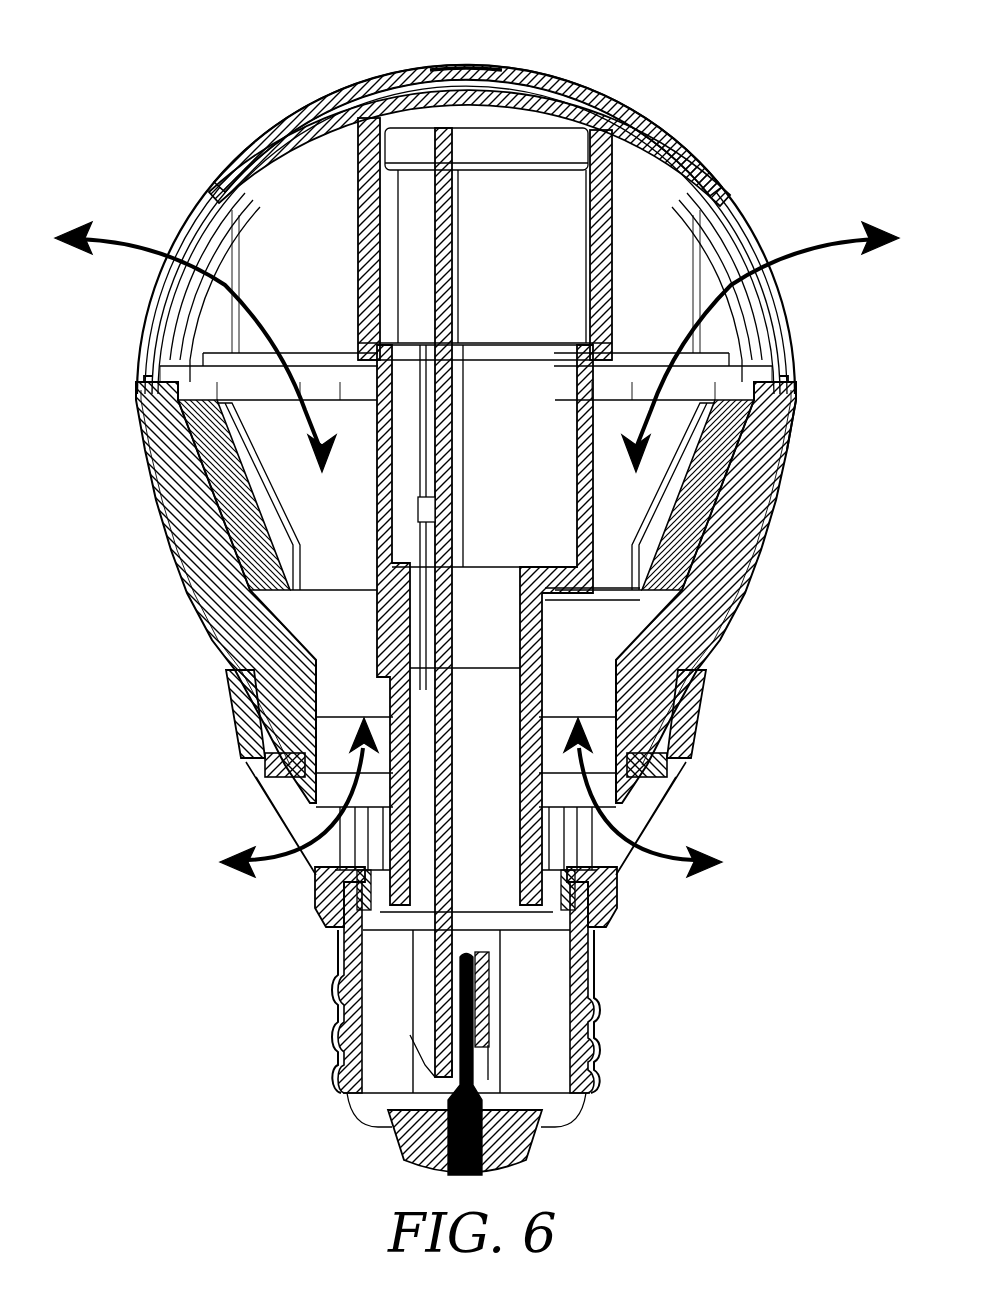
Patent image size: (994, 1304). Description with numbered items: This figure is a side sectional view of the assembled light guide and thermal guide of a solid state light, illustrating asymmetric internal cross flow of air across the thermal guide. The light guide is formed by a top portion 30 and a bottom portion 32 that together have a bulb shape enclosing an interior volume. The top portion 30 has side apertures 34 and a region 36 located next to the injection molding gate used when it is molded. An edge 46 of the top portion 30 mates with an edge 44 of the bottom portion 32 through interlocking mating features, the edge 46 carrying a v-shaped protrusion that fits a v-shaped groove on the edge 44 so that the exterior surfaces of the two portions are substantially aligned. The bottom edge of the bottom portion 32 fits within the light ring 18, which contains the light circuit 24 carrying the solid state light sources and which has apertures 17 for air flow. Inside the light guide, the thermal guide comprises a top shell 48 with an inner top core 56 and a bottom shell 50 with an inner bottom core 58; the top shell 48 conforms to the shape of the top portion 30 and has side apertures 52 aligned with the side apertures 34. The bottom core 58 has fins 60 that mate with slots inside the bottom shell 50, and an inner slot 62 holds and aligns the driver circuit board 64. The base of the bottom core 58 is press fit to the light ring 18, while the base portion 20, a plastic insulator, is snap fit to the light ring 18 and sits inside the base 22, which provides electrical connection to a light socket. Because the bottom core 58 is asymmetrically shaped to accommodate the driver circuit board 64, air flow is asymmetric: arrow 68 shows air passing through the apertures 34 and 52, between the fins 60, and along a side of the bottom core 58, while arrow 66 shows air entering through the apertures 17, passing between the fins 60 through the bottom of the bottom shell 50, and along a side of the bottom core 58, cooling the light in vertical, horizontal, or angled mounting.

The apertures 17 is at (640, 792).
The light ring 18 is at (685, 762).
The base portion 20 is at (598, 925).
The base 22 is at (605, 1035).
The light circuit 24 is at (655, 740).
The top portion 30 is at (672, 130).
The bottom portion 32 is at (752, 535).
The side apertures 34 is at (782, 310).
The region 36 is at (470, 66).
The edge 44 is at (798, 380).
The edge 46 is at (793, 412).
The top shell 48 is at (295, 150).
The bottom shell 50 is at (243, 545).
The side apertures 52 is at (212, 222).
The inner top core 56 is at (362, 268).
The inner bottom core 58 is at (385, 615).
The fins 60 is at (262, 447).
The inner slot 62 is at (455, 330).
The driver circuit board 64 is at (454, 217).
The arrow 66 is at (281, 862).
The arrow 68 is at (133, 247).